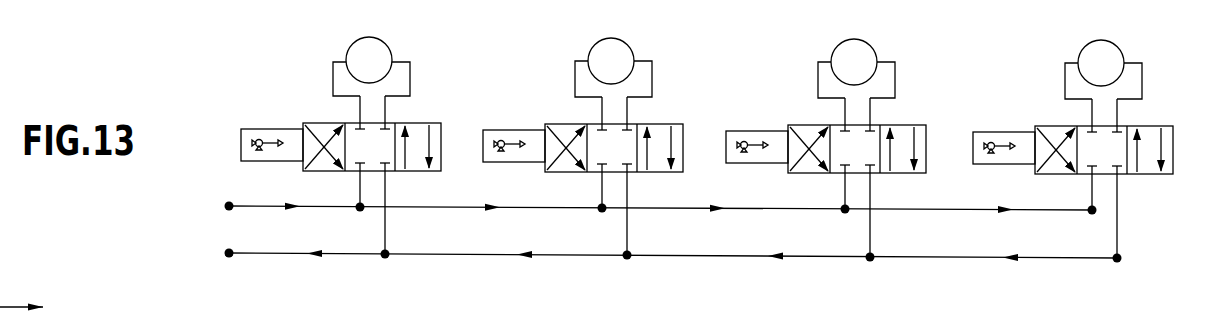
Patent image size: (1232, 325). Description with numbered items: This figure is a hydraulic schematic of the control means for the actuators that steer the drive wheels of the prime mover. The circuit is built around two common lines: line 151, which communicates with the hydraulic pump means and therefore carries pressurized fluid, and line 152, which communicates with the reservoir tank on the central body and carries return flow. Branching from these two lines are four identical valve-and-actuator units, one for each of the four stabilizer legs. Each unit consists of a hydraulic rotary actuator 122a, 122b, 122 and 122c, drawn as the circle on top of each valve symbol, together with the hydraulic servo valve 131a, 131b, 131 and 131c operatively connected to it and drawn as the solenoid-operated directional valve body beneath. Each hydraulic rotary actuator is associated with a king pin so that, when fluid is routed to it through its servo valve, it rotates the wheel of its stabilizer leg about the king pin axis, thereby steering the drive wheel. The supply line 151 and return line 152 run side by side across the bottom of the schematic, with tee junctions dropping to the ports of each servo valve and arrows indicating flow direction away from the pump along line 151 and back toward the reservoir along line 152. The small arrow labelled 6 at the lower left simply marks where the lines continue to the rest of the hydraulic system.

The hydraulic rotary actuator 122a is at (392, 47).
The hydraulic servo valve 131a is at (422, 122).
The hydraulic rotary actuator 122b is at (634, 47).
The hydraulic servo valve 131b is at (665, 123).
The hydraulic rotary actuator 122 is at (877, 48).
The hydraulic servo valve 131 is at (908, 124).
The hydraulic rotary actuator 122c is at (1124, 49).
The hydraulic servo valve 131c is at (1156, 125).
The line 151 is at (252, 208).
The line 152 is at (246, 256).
The fluid line 6 is at (31, 308).